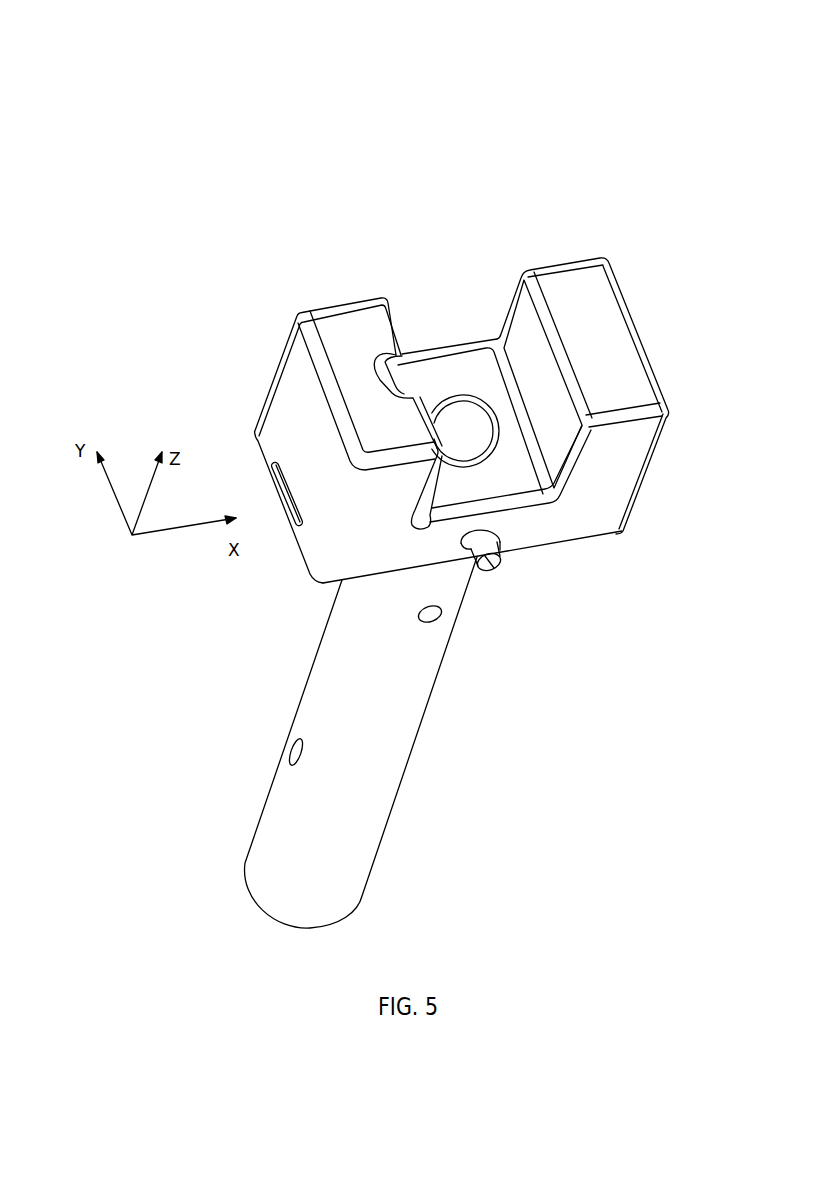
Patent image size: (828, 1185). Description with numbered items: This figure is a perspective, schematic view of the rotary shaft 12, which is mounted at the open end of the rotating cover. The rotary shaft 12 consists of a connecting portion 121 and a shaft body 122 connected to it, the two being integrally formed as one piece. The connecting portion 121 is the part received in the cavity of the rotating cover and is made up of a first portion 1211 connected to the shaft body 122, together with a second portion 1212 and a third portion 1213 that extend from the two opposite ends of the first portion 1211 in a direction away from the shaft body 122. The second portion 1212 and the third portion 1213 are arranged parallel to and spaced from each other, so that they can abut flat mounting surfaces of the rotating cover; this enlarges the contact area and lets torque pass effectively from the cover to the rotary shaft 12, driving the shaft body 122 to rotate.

The rotary shaft 12 is at (404, 44).
The connecting portion 121 is at (587, 164).
The first portion 1211 is at (448, 373).
The second portion 1212 is at (355, 335).
The third portion 1213 is at (583, 297).
The shaft body 122 is at (373, 728).